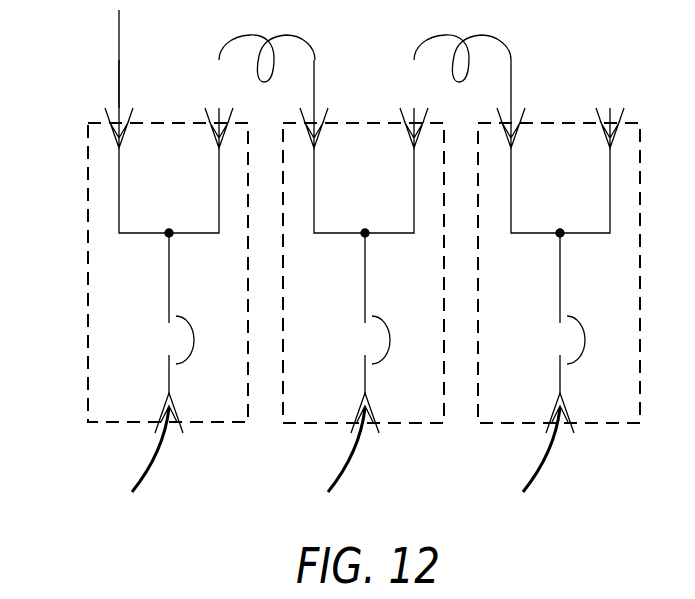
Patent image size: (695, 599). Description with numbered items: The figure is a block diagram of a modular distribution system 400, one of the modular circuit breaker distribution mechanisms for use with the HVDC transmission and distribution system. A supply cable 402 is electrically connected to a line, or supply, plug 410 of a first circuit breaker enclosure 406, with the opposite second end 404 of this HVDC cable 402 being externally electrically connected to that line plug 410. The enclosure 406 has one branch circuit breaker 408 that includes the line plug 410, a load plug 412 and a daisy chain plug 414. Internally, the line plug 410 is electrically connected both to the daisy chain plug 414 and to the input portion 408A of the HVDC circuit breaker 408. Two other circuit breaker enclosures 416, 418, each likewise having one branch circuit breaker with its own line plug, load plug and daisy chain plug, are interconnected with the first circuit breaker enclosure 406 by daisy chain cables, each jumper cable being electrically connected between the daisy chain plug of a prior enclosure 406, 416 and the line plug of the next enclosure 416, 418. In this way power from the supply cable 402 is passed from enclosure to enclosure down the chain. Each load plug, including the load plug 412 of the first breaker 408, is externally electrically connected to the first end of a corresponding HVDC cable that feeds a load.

The modular distribution system 400 is at (57, 129).
The supply cable 402 is at (118, 48).
The second end of the HVDC cable 404 is at (120, 88).
The circuit breaker enclosure 406 is at (128, 429).
The branch circuit breaker 408 is at (185, 320).
The input portion of the HVDC circuit breaker 408A is at (166, 238).
The line plug 410 is at (124, 142).
The load plug 412 is at (162, 405).
The daisy chain plug 414 is at (211, 133).
The circuit breaker enclosure 416 is at (323, 429).
The circuit breaker enclosure 418 is at (518, 429).